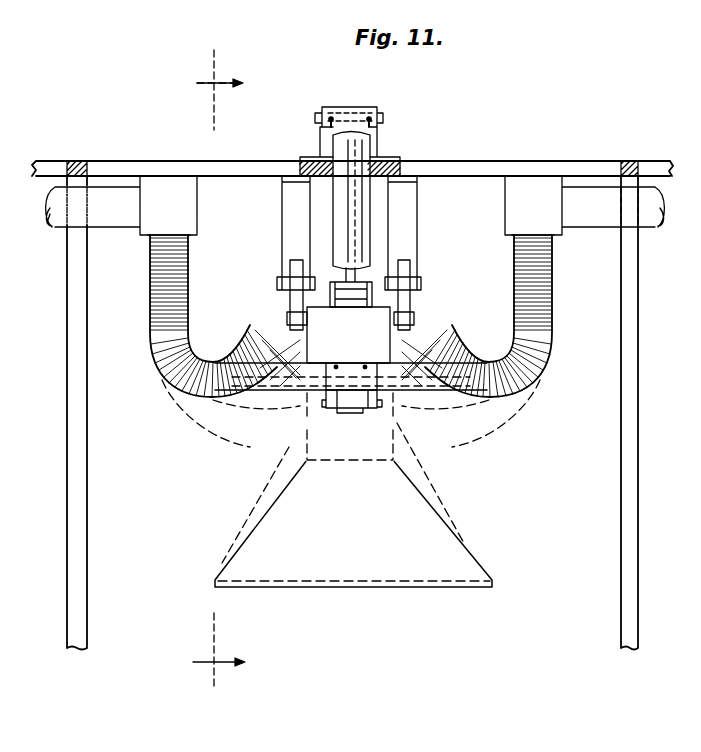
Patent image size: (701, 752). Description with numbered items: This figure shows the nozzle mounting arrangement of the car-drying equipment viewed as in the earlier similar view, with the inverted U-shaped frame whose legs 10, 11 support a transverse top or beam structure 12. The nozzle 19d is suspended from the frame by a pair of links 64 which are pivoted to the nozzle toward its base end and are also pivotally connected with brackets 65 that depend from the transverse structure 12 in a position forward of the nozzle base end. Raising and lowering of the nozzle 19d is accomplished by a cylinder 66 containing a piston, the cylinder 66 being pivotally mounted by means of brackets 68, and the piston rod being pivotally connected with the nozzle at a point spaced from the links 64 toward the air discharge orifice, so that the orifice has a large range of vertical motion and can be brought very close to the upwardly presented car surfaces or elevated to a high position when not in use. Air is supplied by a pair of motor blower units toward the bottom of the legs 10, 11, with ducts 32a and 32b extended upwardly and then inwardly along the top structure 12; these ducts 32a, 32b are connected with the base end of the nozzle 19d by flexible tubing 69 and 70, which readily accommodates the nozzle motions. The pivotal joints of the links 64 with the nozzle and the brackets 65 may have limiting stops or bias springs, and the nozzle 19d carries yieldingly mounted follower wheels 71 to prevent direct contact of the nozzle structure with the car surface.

The leg 10 is at (58, 433).
The leg 11 is at (609, 426).
The transverse top or beam structure 12 is at (502, 157).
The duct 32a is at (114, 196).
The duct 32b is at (591, 194).
The links 64 is at (290, 293).
The brackets 65 is at (290, 210).
The cylinder 66 is at (340, 210).
The brackets 68 is at (378, 143).
The flexible tubing 69 is at (160, 323).
The flexible tubing 70 is at (552, 345).
The follower wheels 71 is at (348, 415).
The nozzle 19d is at (279, 392).